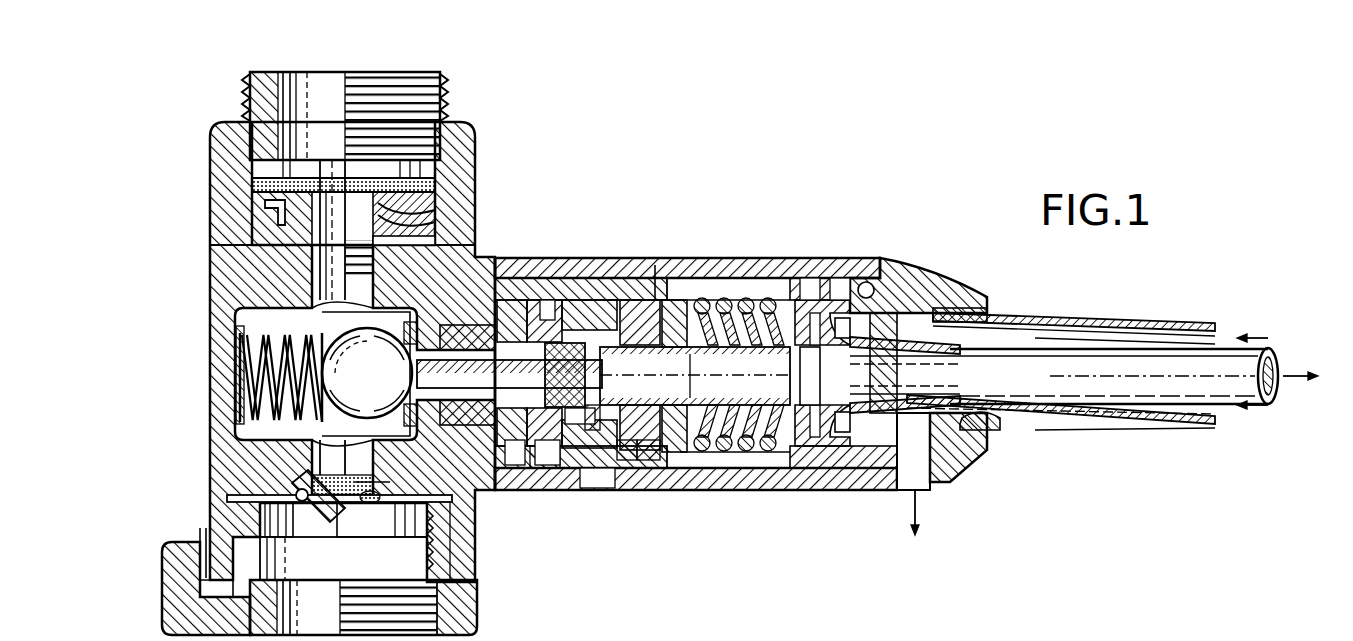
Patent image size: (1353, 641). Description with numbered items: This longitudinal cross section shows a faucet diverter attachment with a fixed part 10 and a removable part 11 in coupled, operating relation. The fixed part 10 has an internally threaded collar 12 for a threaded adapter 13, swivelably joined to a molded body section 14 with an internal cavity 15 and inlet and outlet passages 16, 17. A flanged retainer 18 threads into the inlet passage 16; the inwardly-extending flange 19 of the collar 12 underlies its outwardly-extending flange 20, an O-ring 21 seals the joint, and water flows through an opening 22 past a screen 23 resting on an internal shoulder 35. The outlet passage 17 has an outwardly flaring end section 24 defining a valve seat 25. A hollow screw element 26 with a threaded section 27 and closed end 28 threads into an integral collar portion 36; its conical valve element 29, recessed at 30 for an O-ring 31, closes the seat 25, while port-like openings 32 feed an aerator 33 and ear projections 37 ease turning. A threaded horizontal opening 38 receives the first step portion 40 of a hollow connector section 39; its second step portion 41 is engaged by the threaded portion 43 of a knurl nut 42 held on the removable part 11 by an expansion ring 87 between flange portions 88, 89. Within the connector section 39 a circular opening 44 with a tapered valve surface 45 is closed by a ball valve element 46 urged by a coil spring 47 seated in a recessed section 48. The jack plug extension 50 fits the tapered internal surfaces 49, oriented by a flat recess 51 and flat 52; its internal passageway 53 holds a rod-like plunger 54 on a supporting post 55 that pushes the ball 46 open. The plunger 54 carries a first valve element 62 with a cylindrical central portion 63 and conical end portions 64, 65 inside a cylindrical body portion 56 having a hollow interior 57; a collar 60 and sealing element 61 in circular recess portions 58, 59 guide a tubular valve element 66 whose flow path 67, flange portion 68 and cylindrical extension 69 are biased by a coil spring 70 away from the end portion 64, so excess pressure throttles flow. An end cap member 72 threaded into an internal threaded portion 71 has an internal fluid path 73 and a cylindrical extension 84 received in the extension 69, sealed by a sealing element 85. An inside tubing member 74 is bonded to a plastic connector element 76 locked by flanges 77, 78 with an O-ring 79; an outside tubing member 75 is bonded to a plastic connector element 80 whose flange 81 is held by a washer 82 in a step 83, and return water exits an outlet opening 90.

The fixed part 10 is at (195, 214).
The removable part 11 is at (745, 238).
The internally threaded collar 12 is at (222, 158).
The threaded adapter 13 is at (442, 92).
The molded body section 14 is at (215, 305).
The internal cavity 15 is at (270, 436).
The inlet passage 16 is at (290, 268).
The outlet passage 17 is at (352, 469).
The flanged retainer 18 is at (415, 212).
The inwardly-extending flange 19 is at (408, 225).
The outwardly-extending flange 20 is at (273, 202).
The O-ring 21 is at (412, 242).
The opening 22 is at (352, 302).
The screen 23 is at (253, 184).
The outwardly flaring end section 24 is at (378, 493).
The valve seat 25 is at (378, 503).
The hollow screw element 26 is at (478, 610).
The threaded section 27 is at (352, 607).
The closed end 28 is at (228, 498).
The conical valve element 29 is at (300, 488).
The recess 30 is at (305, 500).
The O-ring 31 is at (360, 503).
The port-like openings 32 is at (270, 515).
The aerator 33 is at (410, 570).
The internal shoulder 35 is at (425, 205).
The internally-threaded collar portion 36 is at (455, 545).
The ear projections 37 is at (165, 578).
The threaded horizontal opening 38 is at (468, 335).
The hollow connector section 39 is at (581, 363).
The first step portion 40 is at (439, 265).
The second step portion 41 is at (512, 475).
The knurl nut 42 is at (643, 265).
The threaded portion 43 is at (555, 472).
The circular opening 44 is at (509, 367).
The valve surface 45 is at (437, 413).
The ball valve element 46 is at (345, 367).
The coil spring 47 is at (240, 353).
The recessed section 48 is at (236, 420).
The internal surfaces 49 is at (472, 448).
The jack plug extension 50 is at (592, 470).
The flat recess 51 is at (530, 320).
The flat 52 is at (552, 318).
The internal passageway 53 is at (592, 412).
The rod-like plunger 54 is at (470, 416).
The supporting post 55 is at (541, 312).
The cylindrical body portion 56 is at (780, 267).
The hollow interior 57 is at (770, 462).
The circular recess portion 58 is at (687, 290).
The circular recess portion 59 is at (630, 320).
The collar 60 is at (685, 458).
The sealing element 61 is at (668, 380).
The first valve element 62 is at (590, 340).
The cylindrical central portion 63 is at (549, 452).
The conically tapered end portion 64 is at (600, 385).
The conically tapered end portion 65 is at (518, 452).
The tubular valve element 66 is at (737, 354).
The flow path 67 is at (695, 362).
The flange portion 68 is at (804, 272).
The cylindrical extension 69 is at (838, 274).
The coil spring 70 is at (750, 450).
The internal threaded portion 71 is at (868, 280).
The end cap member 72 is at (922, 283).
The internal fluid path 73 is at (866, 420).
The inside tubing member 74 is at (1265, 356).
The outside tubing member 75 is at (1180, 430).
The plastic connector element 76 is at (896, 347).
The outwardly extending flange 77 is at (802, 346).
The inwardly extending flange 78 is at (830, 330).
The O-ring 79 is at (826, 346).
The plastic connector element 80 is at (1025, 317).
The outwardly extending flange 81 is at (958, 470).
The washer 82 is at (985, 312).
The step 83 is at (1008, 430).
The cylindrical extension 84 is at (808, 372).
The sealing element 85 is at (795, 463).
The expansion ring 87 is at (622, 455).
The flange portion 88 is at (640, 455).
The flange portion 89 is at (597, 477).
The outlet opening 90 is at (908, 472).